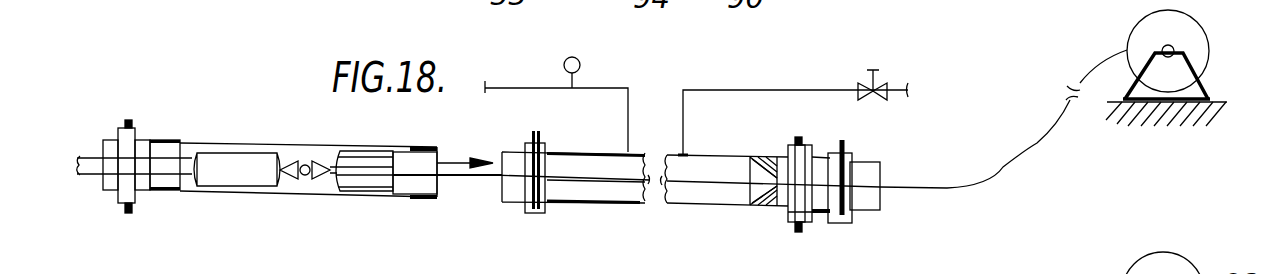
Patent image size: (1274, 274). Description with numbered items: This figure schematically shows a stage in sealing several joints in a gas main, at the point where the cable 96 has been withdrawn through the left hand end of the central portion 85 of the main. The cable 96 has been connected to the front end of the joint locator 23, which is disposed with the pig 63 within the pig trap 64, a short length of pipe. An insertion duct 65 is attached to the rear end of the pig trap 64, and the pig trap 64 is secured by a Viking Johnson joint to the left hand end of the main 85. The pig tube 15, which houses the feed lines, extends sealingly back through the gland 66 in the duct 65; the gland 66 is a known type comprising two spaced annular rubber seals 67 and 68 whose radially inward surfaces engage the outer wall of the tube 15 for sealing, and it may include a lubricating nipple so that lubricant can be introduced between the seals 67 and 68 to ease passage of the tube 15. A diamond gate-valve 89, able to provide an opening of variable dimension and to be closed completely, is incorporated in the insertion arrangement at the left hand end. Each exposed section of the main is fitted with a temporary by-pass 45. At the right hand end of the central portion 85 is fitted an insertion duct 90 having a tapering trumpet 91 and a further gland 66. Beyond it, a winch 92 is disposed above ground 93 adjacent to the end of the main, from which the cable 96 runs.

The tube 15 is at (187, 152).
The joint locator 23 is at (360, 153).
The temporary by-pass 45 is at (597, 88).
The pig 63 is at (230, 160).
The pig trap 64 is at (285, 195).
The insertion duct 65 is at (142, 141).
The gland 66 is at (118, 128).
The annular rubber seal 67 is at (113, 193).
The annular rubber seal 68 is at (137, 193).
The central portion of the main 85 is at (607, 203).
The diamond gate-valve 89 is at (532, 180).
The insertion duct 90 is at (767, 207).
The tapering trumpet 91 is at (767, 157).
The winch 92 is at (1200, 42).
The ground 93 is at (1167, 120).
The cable 96 is at (1042, 147).